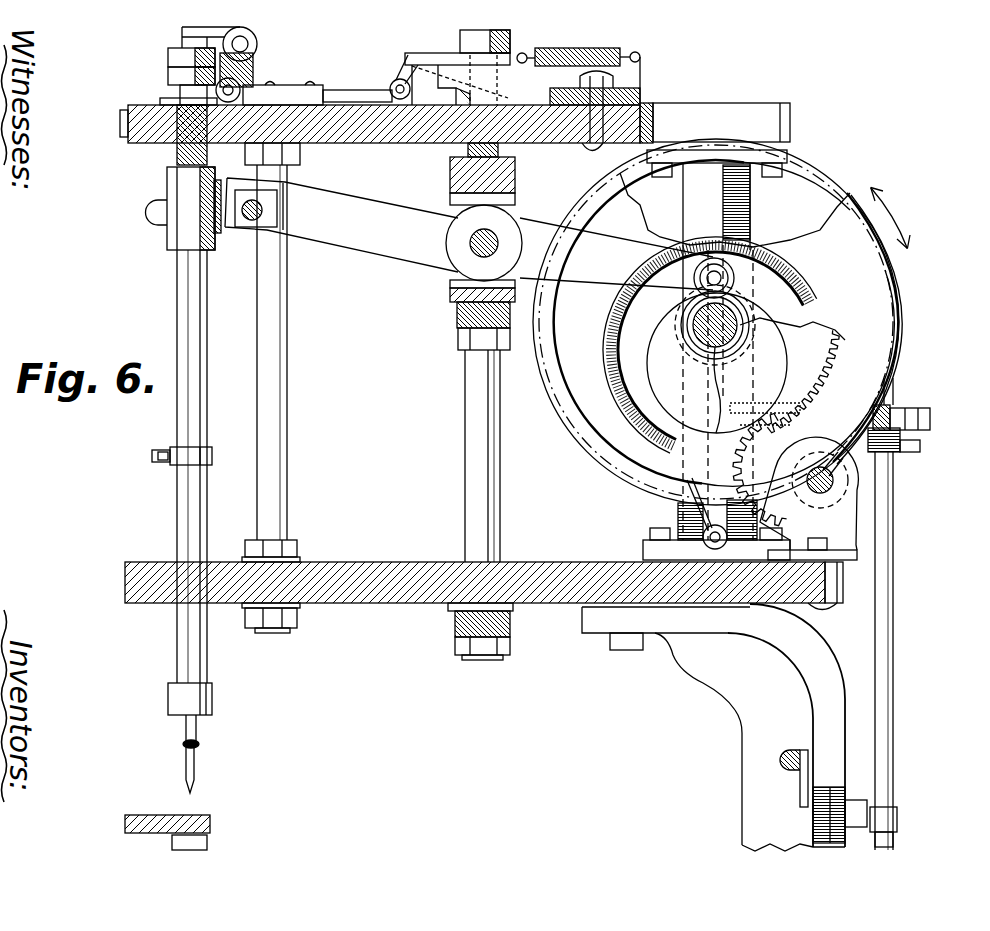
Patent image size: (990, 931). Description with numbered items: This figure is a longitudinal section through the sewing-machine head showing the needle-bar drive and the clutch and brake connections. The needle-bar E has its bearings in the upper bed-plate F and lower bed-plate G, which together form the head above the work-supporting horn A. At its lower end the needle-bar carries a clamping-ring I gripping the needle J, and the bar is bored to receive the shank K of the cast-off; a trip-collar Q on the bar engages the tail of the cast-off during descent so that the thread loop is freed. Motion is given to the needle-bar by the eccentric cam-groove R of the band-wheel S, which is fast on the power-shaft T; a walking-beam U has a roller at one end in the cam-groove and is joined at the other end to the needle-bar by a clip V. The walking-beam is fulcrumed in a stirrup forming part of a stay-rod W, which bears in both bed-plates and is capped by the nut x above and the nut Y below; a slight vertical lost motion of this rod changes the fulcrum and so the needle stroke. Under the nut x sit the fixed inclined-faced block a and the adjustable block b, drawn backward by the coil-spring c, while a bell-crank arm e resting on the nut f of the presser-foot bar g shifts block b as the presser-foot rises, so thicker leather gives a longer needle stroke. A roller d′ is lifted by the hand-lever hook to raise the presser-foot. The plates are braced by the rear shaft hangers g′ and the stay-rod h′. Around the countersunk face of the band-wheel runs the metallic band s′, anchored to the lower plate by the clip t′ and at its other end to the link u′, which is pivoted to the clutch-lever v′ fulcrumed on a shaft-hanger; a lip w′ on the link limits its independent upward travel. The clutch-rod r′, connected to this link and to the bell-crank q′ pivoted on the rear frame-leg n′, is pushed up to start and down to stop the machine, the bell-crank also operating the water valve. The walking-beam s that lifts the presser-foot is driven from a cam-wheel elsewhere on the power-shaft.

The bell-crank arm e is at (182, 30).
The nut f is at (168, 58).
The presser-foot bar g is at (168, 80).
The roller d′ is at (253, 66).
The upper bed-plate F is at (136, 145).
The clip V is at (170, 225).
The walking-beam U is at (479, 238).
The adjustable inclined-faced block b is at (448, 53).
The nut x is at (520, 42).
The coil-spring c is at (592, 48).
The fixed inclined-faced block a is at (460, 80).
The rear shaft hangers g′ is at (752, 200).
The band-wheel S is at (716, 322).
The eccentric cam-groove R is at (710, 345).
The power-shaft T is at (705, 346).
The walking-beam s is at (900, 374).
The link u′ is at (900, 412).
The clutch-lever v′ is at (930, 420).
The lip w′ is at (915, 452).
The metallic band s′ is at (690, 505).
The clip t′ is at (708, 545).
The clutch-rod r′ is at (893, 543).
The rear frame-leg n′ is at (713, 727).
The bell-crank q′ is at (815, 800).
The stay-rod h′ is at (287, 340).
The needle-bar E is at (208, 425).
The trip-collar Q is at (180, 463).
The stay-rod W is at (465, 480).
The lower bed-plate G is at (142, 605).
The nut Y is at (457, 625).
The clamping-ring I is at (168, 700).
The needle J is at (197, 722).
The cast-off shank K is at (199, 744).
The work-supporting horn A is at (207, 840).